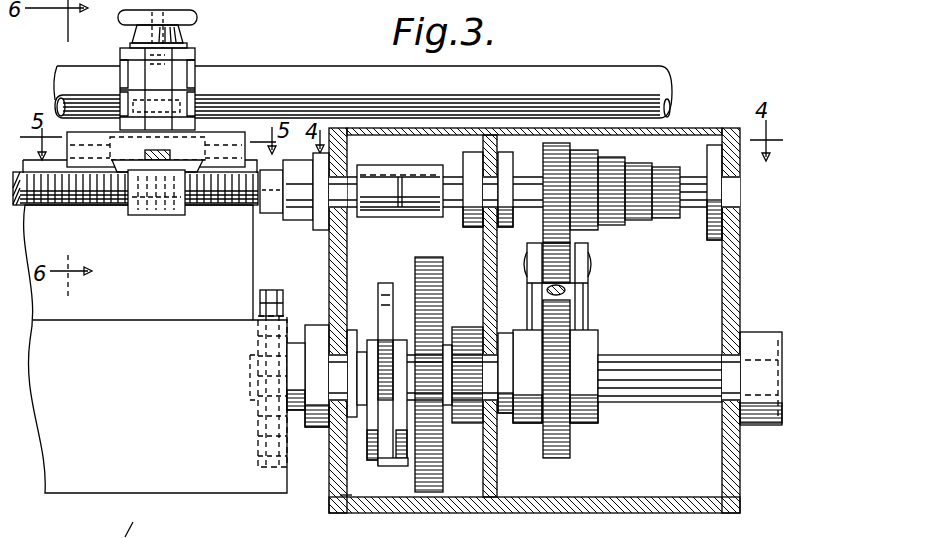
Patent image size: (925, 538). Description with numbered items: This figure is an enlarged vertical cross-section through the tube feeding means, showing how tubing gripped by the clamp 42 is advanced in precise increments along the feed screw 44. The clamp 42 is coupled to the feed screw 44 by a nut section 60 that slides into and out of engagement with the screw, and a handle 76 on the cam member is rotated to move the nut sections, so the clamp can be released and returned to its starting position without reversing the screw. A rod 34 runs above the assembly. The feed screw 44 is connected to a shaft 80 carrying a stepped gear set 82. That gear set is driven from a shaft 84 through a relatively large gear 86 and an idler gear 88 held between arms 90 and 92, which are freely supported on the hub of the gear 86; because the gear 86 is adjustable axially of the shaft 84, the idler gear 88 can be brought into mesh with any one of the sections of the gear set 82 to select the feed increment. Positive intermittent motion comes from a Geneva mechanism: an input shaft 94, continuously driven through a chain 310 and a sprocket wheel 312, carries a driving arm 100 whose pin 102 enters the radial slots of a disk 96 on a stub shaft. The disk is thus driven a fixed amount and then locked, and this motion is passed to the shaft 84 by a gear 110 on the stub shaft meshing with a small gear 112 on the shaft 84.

The rod 34 is at (652, 78).
The clamp 42 is at (209, 44).
The feed screw 44 is at (68, 225).
The nut section 60 is at (178, 216).
The handle 76 is at (180, 147).
The shaft 80 is at (462, 128).
The gear set 82 is at (553, 142).
The shaft 84 is at (673, 358).
The gear 86 is at (558, 458).
The idler gear 88 is at (575, 241).
The arm 90 is at (582, 297).
The arm 92 is at (532, 310).
The input shaft 94 is at (252, 383).
The disk 96 is at (388, 283).
The driving arm 100 is at (399, 466).
The pin 102 is at (388, 462).
The gear 110 is at (431, 262).
The small gear 112 is at (435, 452).
The chain 310 is at (272, 290).
The sprocket wheel 312 is at (296, 408).